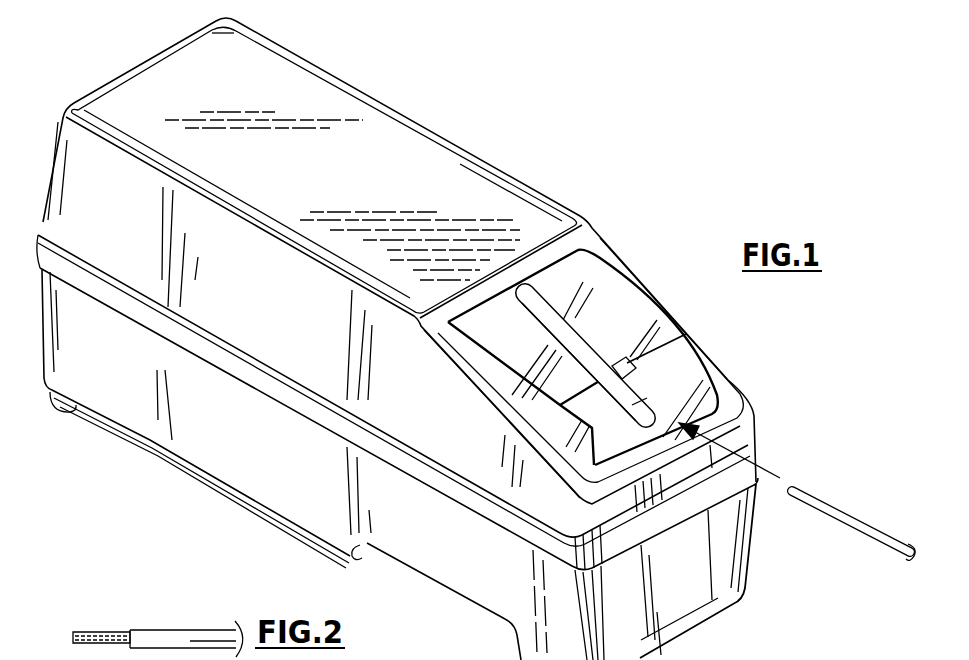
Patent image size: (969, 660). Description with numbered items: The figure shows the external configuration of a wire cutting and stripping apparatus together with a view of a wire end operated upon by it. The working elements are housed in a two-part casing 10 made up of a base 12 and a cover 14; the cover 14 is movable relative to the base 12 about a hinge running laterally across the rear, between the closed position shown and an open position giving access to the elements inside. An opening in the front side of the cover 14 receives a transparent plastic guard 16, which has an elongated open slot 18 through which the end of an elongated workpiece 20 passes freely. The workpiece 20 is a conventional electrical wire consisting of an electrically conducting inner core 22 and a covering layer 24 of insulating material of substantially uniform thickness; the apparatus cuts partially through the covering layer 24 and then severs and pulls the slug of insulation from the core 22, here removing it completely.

In FIG. 1, the two-part casing 10 is at (113, 461).
In FIG. 1, the base portion 12 is at (234, 461).
In FIG. 1, the cover portion 14 is at (447, 170).
In FIG. 1, the transparent plastic guard 16 is at (619, 303).
In FIG. 1, the elongated open slot 18 is at (554, 317).
In FIG. 1, the elongated workpiece 20 is at (823, 498).
In FIG. 2, the inner core 22 is at (117, 632).
In FIG. 2, the covering layer 24 is at (160, 632).